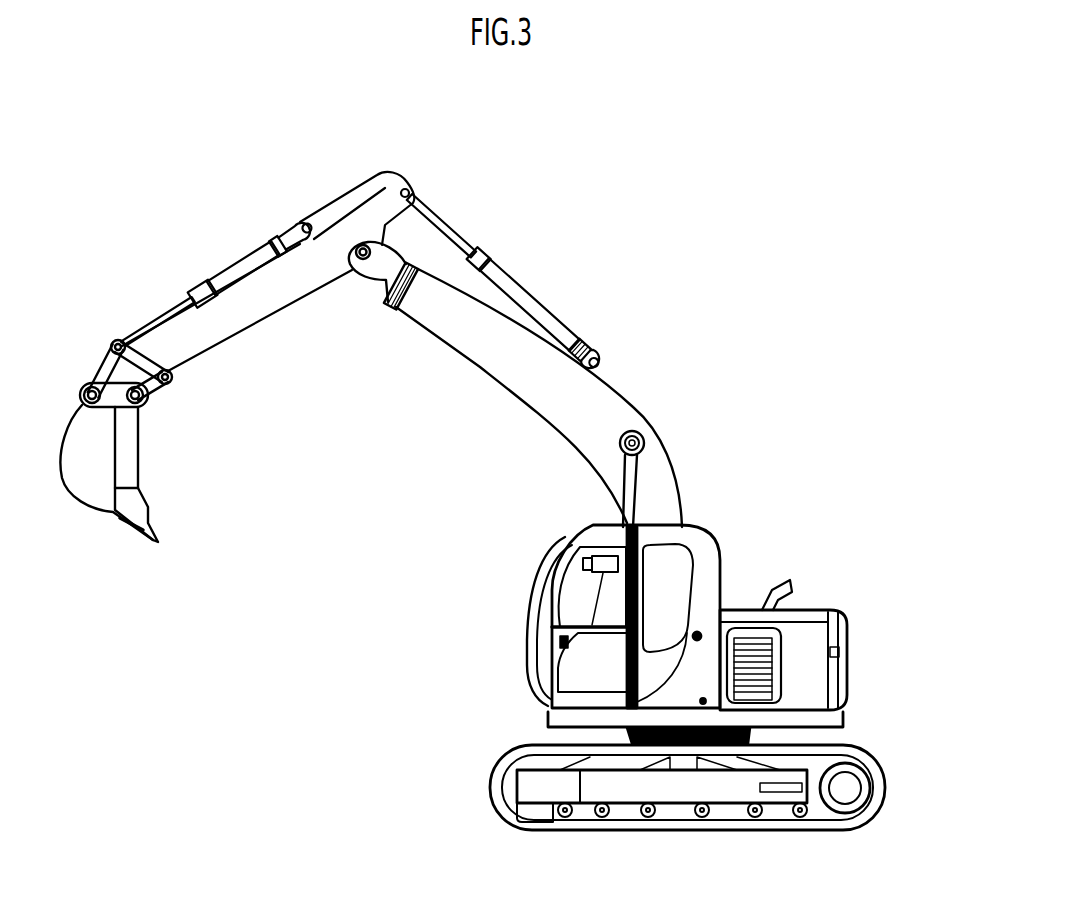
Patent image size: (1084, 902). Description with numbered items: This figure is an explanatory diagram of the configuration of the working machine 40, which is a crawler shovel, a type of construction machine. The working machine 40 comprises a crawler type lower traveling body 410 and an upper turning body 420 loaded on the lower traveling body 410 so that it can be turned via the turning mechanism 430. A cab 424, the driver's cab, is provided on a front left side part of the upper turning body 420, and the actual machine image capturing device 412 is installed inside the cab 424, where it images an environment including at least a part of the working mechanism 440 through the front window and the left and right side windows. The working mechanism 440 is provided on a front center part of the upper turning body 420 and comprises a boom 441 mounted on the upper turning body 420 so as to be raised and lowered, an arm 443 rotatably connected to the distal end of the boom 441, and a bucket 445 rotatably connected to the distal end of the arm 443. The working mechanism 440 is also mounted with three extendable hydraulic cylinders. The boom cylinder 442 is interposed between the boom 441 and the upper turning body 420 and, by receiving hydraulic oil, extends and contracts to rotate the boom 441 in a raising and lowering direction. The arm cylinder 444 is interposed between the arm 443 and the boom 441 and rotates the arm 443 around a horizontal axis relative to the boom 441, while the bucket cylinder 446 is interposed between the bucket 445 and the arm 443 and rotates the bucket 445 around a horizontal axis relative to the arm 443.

The working machine 40 is at (713, 158).
The lower traveling body 410 is at (510, 750).
The actual machine image capturing device 412 is at (600, 556).
The upper turning body 420 is at (866, 640).
The cab 424 is at (716, 526).
The turning mechanism 430 is at (762, 740).
The working mechanism 440 is at (495, 203).
The boom 441 is at (665, 462).
The boom cylinder 442 is at (618, 505).
The arm 443 is at (260, 317).
The arm cylinder 444 is at (532, 297).
The bucket 445 is at (92, 495).
The bucket cylinder 446 is at (250, 250).